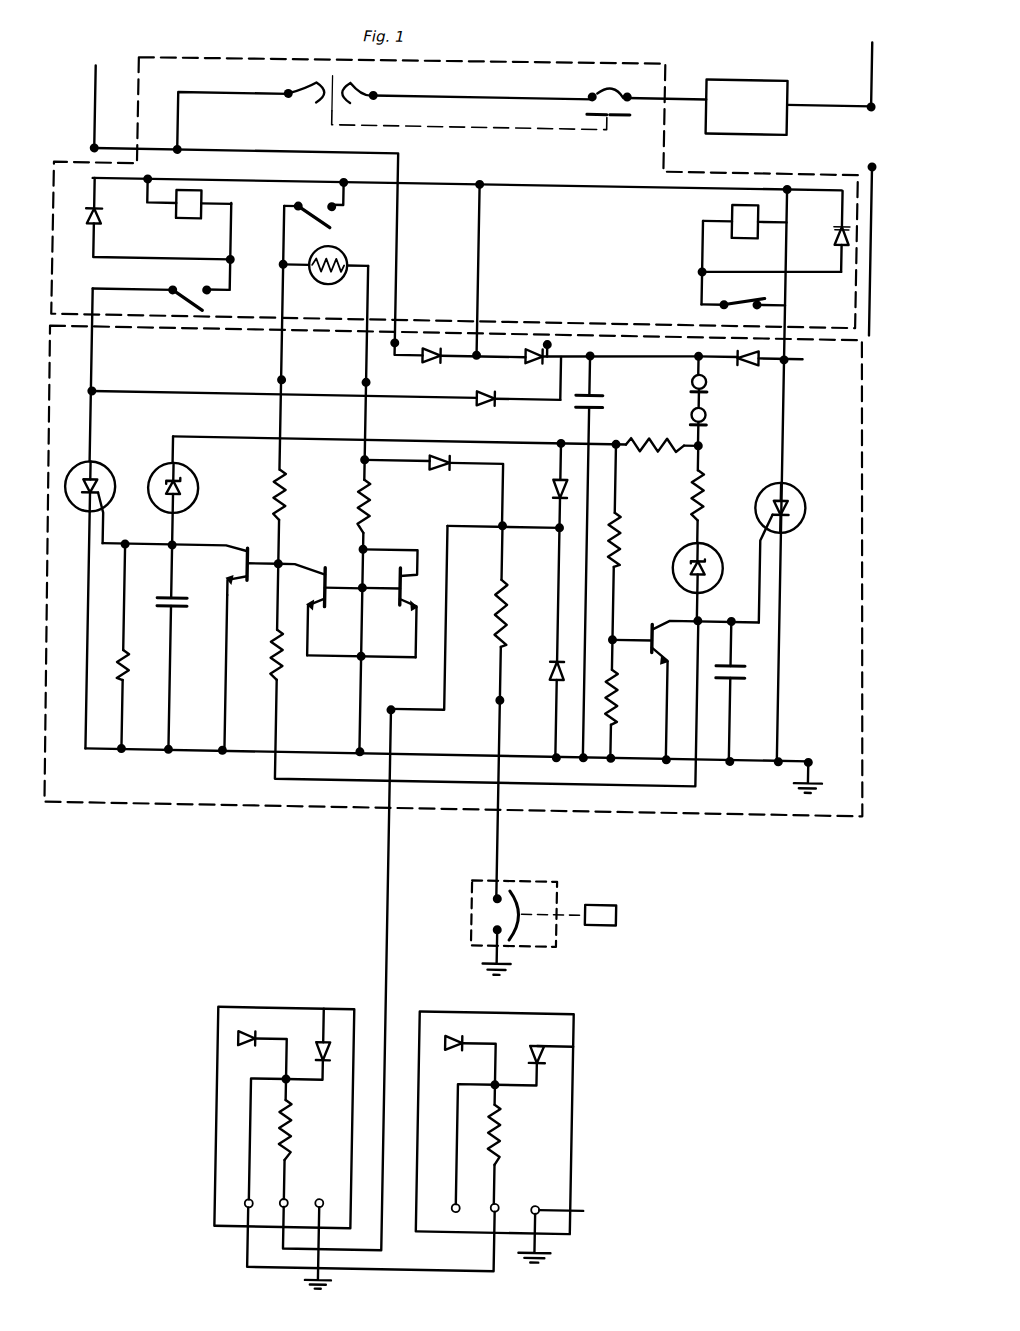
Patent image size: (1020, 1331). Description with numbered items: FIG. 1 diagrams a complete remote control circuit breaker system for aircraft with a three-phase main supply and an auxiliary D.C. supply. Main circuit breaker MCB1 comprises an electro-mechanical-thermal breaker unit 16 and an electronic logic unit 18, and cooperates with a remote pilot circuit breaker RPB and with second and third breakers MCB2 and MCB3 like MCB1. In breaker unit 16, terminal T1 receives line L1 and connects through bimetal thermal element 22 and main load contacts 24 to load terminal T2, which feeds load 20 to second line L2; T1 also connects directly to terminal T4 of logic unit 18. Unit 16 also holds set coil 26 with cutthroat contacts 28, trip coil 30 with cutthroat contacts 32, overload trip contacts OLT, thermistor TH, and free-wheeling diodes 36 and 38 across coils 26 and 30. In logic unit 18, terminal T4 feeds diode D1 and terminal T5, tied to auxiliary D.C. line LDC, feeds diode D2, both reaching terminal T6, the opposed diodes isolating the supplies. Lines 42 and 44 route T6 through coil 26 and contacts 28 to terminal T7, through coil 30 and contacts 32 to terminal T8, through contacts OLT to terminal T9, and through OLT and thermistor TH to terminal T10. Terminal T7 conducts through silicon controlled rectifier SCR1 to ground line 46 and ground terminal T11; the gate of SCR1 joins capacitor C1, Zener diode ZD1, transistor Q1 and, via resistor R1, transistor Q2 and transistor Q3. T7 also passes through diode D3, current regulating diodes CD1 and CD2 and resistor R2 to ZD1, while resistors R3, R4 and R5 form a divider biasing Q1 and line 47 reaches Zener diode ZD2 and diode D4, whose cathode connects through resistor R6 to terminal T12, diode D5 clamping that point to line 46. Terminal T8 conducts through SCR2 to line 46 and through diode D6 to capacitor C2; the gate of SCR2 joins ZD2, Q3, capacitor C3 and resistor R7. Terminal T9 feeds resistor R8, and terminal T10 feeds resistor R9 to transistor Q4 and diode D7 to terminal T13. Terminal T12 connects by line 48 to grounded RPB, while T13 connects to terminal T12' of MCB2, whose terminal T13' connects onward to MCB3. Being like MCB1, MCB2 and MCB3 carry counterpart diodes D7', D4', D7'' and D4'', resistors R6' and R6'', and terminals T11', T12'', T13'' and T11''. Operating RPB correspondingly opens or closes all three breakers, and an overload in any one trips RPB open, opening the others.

The electro-mechanical-thermal breaker unit 16 is at (654, 145).
The electronic logic unit 18 is at (338, 812).
The load 20 is at (745, 76).
The bimetal thermal element 22 is at (316, 119).
The main load contacts 24 is at (603, 90).
The set coil 26 is at (722, 210).
The cutthroat contacts 28 is at (766, 296).
The trip coil 30 is at (188, 226).
The cutthroat contacts 32 is at (165, 292).
The diode 36 is at (829, 241).
The diode 38 is at (108, 219).
The line 42 is at (471, 241).
The line 44 is at (427, 184).
The ground line 46 is at (458, 753).
The line 47 is at (324, 441).
The line 48 is at (499, 852).
The line of three-phase supply L1 is at (85, 97).
The second line of A.C. supply L2 is at (861, 42).
The terminal T1 is at (83, 154).
The load terminal T2 is at (859, 100).
The auxiliary D.C. power line LDC is at (876, 152).
The power input terminal T4 is at (390, 358).
The power input terminal T5 is at (541, 336).
The terminal T6 is at (467, 360).
The terminal T7 is at (805, 369).
The terminal T8 is at (90, 396).
The terminal T9 is at (272, 383).
The terminal T10 is at (355, 384).
The ground terminal T11 is at (808, 760).
The terminal T12 is at (477, 699).
The terminal T13 is at (391, 697).
The overload trip contacts OLT is at (330, 224).
The thermistor TH is at (320, 288).
The diode D1 is at (428, 346).
The diode D2 is at (534, 360).
The diode D3 is at (748, 363).
The diode D4 is at (540, 470).
The diode D5 is at (552, 681).
The diode D6 is at (472, 402).
The diode D7 is at (437, 476).
The capacitor C1 is at (743, 672).
The capacitor C2 is at (601, 401).
The capacitor C3 is at (158, 606).
The resistor R1 is at (268, 652).
The resistor R2 is at (703, 484).
The resistor R3 is at (654, 464).
The resistor R4 is at (620, 525).
The resistor R5 is at (620, 701).
The resistor R6 is at (482, 586).
The resistor R7 is at (129, 665).
The resistor R8 is at (270, 494).
The resistor R9 is at (355, 497).
The transistor Q1 is at (650, 624).
The transistor Q2 is at (324, 573).
The transistor Q3 is at (240, 576).
The transistor Q4 is at (395, 606).
The silicon controlled rectifier SCR1 is at (800, 490).
The silicon controlled rectifier SCR2 is at (106, 478).
The Zener diode ZD1 is at (673, 568).
The Zener diode ZD2 is at (191, 481).
The current regulating diode CD1 is at (687, 378).
The current regulating diode CD2 is at (702, 414).
The remote pilot circuit breaker RPB is at (563, 886).
The main circuit breaker MCB1 is at (96, 846).
The second main circuit breaker unit MCB2 is at (232, 1105).
The third main circuit breaker unit MCB3 is at (573, 1099).
The diode D7' is at (249, 1011).
The diode D4' is at (313, 1028).
The resistor R6' is at (306, 1139).
The terminal T13' is at (206, 1203).
The terminal T12' is at (227, 1225).
The terminal T11' is at (315, 1228).
The diode D7'' is at (443, 1020).
The diode D4'' is at (557, 1063).
The resistor R6'' is at (516, 1145).
The terminal T13'' is at (432, 1237).
The terminal T12'' is at (518, 1195).
The terminal T11'' is at (569, 1233).